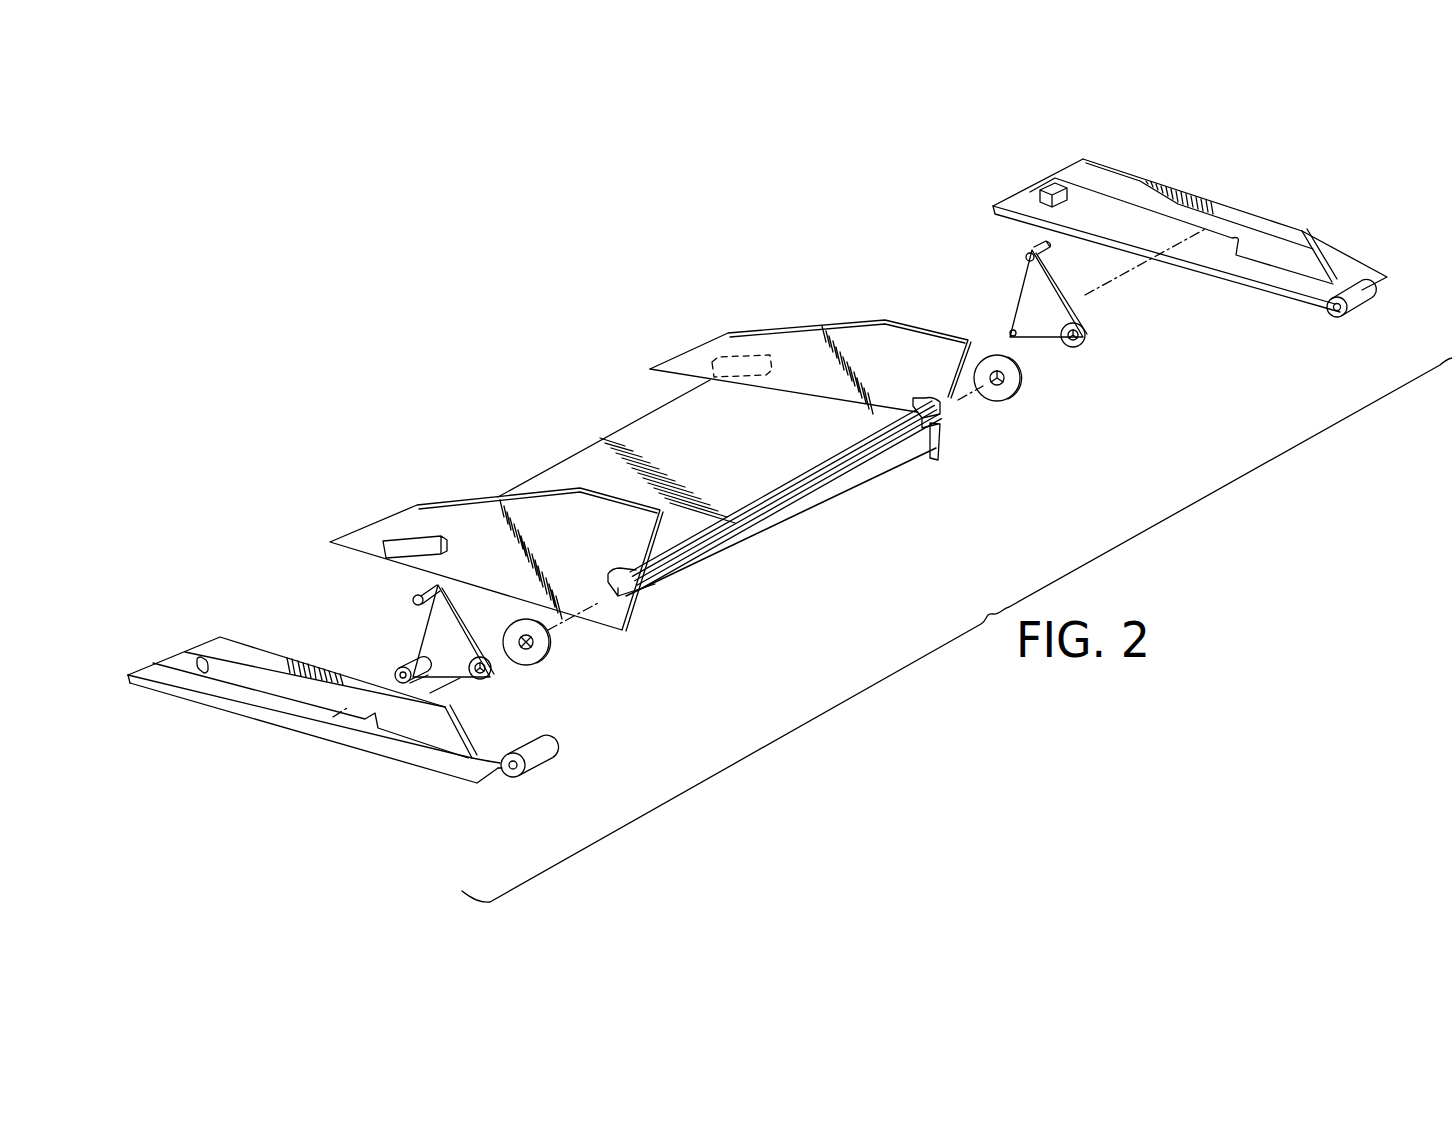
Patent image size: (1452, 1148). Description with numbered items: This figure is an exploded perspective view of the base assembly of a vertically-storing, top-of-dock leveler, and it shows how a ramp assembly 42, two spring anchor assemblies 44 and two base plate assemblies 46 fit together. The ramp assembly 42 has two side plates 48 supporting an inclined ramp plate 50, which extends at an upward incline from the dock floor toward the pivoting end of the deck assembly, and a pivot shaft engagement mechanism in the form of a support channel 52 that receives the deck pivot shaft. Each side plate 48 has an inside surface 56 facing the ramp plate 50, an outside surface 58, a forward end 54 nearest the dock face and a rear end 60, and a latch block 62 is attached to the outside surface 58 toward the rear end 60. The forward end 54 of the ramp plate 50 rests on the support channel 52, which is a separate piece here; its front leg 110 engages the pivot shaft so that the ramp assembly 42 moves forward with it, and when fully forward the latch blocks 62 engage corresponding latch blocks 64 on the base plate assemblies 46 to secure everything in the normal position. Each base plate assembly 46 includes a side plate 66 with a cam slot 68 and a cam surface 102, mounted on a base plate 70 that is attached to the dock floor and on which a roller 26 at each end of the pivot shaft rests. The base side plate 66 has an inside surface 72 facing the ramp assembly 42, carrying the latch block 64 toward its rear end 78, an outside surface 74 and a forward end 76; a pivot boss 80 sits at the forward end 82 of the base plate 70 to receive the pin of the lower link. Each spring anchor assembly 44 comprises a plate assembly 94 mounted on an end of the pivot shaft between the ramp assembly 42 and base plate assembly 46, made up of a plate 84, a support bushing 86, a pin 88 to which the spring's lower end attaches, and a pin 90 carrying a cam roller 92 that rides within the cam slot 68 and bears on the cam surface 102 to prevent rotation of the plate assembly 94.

The roller 26 is at (540, 655).
The ramp assembly 42 is at (466, 347).
The spring anchor assembly 44 is at (599, 701).
The base plate assembly 46 is at (297, 792).
The side plate 48 is at (397, 510).
The inclined ramp plate 50 is at (578, 468).
The support channel 52 is at (843, 468).
The forward end 54 is at (912, 447).
The inside surface 56 is at (857, 338).
The outside surface 58 is at (655, 580).
The rear end 60 is at (607, 440).
The latch block 62 is at (385, 535).
The latch block 64 is at (1038, 183).
The side plate 66 is at (281, 647).
The cam slot 68 is at (250, 675).
The base plate 70 is at (297, 708).
The inside surface 72 is at (1270, 240).
The outside surface 74 is at (425, 728).
The forward end 76 is at (488, 772).
The rear end 78 is at (202, 640).
The pivot boss 80 is at (542, 760).
The forward end 82 is at (476, 782).
The plate 84 is at (415, 632).
The support bushing 86 is at (492, 678).
The pin 88 is at (432, 592).
The pin 90 is at (440, 686).
The cam roller 92 is at (408, 659).
The plate assembly 94 is at (398, 605).
The cam surface 102 is at (360, 722).
The front leg 110 is at (757, 532).